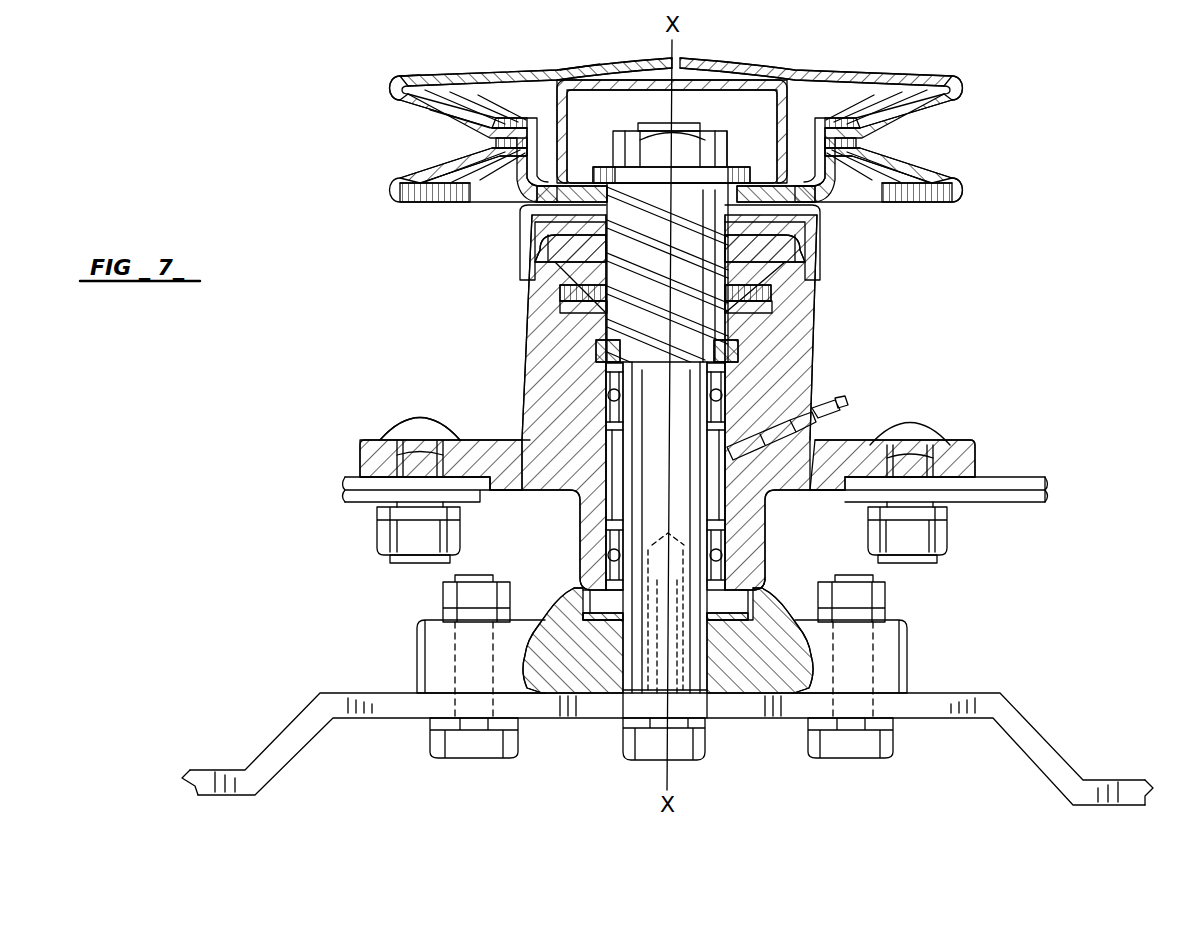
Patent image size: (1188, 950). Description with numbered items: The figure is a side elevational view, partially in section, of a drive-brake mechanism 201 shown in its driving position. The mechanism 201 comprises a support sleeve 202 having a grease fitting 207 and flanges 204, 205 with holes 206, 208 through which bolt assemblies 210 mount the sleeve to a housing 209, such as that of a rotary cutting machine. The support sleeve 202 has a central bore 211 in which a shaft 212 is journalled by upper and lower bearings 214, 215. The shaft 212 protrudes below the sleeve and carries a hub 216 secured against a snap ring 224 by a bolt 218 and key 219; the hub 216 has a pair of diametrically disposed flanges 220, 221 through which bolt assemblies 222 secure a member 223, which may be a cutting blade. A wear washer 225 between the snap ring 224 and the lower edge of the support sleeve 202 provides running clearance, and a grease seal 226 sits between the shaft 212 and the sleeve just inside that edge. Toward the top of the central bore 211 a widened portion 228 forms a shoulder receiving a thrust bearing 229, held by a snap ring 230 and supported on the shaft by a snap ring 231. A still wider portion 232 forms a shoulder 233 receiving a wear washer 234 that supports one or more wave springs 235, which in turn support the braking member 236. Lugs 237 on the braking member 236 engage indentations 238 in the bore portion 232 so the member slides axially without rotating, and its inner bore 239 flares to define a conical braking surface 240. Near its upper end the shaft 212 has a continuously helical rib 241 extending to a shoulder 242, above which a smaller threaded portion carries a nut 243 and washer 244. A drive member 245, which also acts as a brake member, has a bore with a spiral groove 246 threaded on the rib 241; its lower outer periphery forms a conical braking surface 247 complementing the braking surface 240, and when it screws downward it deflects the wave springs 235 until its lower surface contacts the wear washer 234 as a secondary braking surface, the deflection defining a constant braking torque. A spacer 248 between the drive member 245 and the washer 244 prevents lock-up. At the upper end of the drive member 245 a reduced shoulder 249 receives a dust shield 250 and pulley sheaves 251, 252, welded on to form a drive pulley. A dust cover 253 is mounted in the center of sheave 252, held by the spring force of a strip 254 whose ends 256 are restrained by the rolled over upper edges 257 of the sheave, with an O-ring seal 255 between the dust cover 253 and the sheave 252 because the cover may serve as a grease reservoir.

The mechanism 201 is at (835, 348).
The support sleeve 202 is at (520, 400).
The flange 204 is at (365, 448).
The flange 205 is at (945, 450).
The hole 206 is at (395, 440).
The grease fitting 207 is at (840, 402).
The hole 208 is at (920, 462).
The housing 209 is at (370, 500).
The bolt assembly 210 is at (412, 420).
The central bore 211 is at (735, 510).
The shaft 212 is at (650, 497).
The upper bearing 214 is at (606, 505).
The lower bearing 215 is at (735, 548).
The hub 216 is at (755, 625).
The bolt 218 is at (700, 770).
The key 219 is at (700, 718).
The flange 220 is at (895, 660).
The flange 221 is at (420, 668).
The bolt assembly 222 is at (440, 600).
The member 223 is at (1035, 748).
The snap ring 224 is at (580, 618).
The wear washer 225 is at (748, 612).
The grease seal 226 is at (760, 578).
The widened portion 228 is at (750, 345).
The thrust bearing 229 is at (606, 395).
The snap ring 230 is at (790, 325).
The snap ring 231 is at (730, 365).
The still wider portion 232 is at (560, 290).
The shoulder 233 is at (565, 325).
The wear washer 234 is at (590, 340).
The wave spring 235 is at (785, 308).
The braking member 236 is at (560, 308).
The lug 237 is at (795, 265).
The indentation 238 is at (790, 290).
The inner bore 239 is at (606, 365).
The braking surface 240 is at (545, 262).
The helical rib 241 is at (800, 242).
The shoulder 242 is at (640, 140).
The nut 243 is at (725, 145).
The washer 244 is at (605, 140).
The drive member 245 is at (528, 222).
The spiral groove 246 is at (810, 222).
The braking surface 247 is at (548, 242).
The spacer 248 is at (748, 185).
The shoulder 249 is at (573, 188).
The dust shield 250 is at (860, 208).
The pulley sheave 251 is at (938, 184).
The pulley sheave 252 is at (952, 92).
The dust cover 253 is at (530, 78).
The strip 254 is at (600, 58).
The O-ring seal 255 is at (860, 162).
The end 256 is at (425, 78).
The rolled over upper edge 257 is at (400, 88).